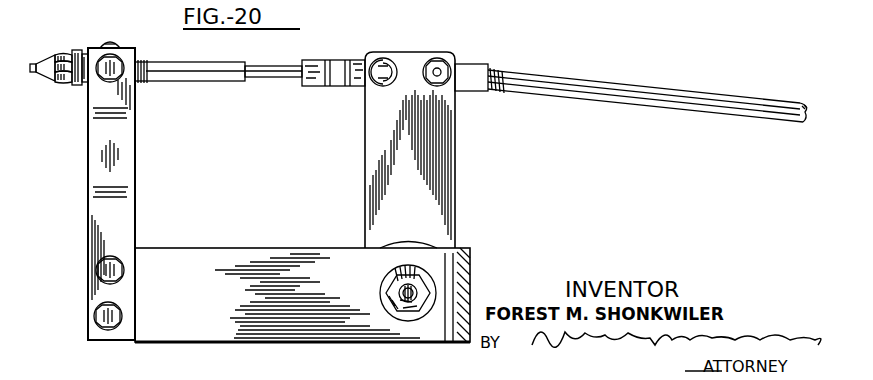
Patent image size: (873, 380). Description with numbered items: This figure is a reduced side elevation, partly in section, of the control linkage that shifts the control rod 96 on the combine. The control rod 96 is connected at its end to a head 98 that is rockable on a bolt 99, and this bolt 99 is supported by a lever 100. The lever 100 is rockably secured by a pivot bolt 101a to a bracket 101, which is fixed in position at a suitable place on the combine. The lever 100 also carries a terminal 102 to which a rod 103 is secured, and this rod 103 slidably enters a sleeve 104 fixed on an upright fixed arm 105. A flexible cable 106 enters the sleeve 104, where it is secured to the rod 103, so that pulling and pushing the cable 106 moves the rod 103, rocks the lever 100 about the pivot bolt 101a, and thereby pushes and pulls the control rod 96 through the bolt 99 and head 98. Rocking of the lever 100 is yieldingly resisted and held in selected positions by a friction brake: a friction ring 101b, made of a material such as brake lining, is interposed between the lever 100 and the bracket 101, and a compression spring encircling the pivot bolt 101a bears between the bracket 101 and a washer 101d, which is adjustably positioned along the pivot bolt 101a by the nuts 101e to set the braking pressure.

The control rod 96 is at (678, 97).
The head 98 is at (481, 42).
The bolt 99 is at (410, 40).
The lever 100 is at (372, 146).
The bracket 101 is at (207, 237).
The pivot bolt 101a is at (398, 268).
The friction ring 101b is at (388, 247).
The washer 101d is at (394, 284).
The nuts 101e is at (392, 296).
The terminal 102 is at (322, 67).
The rod 103 is at (262, 73).
The sleeve 104 is at (197, 66).
The upright fixed arm 105 is at (96, 152).
The flexible cable 106 is at (32, 62).